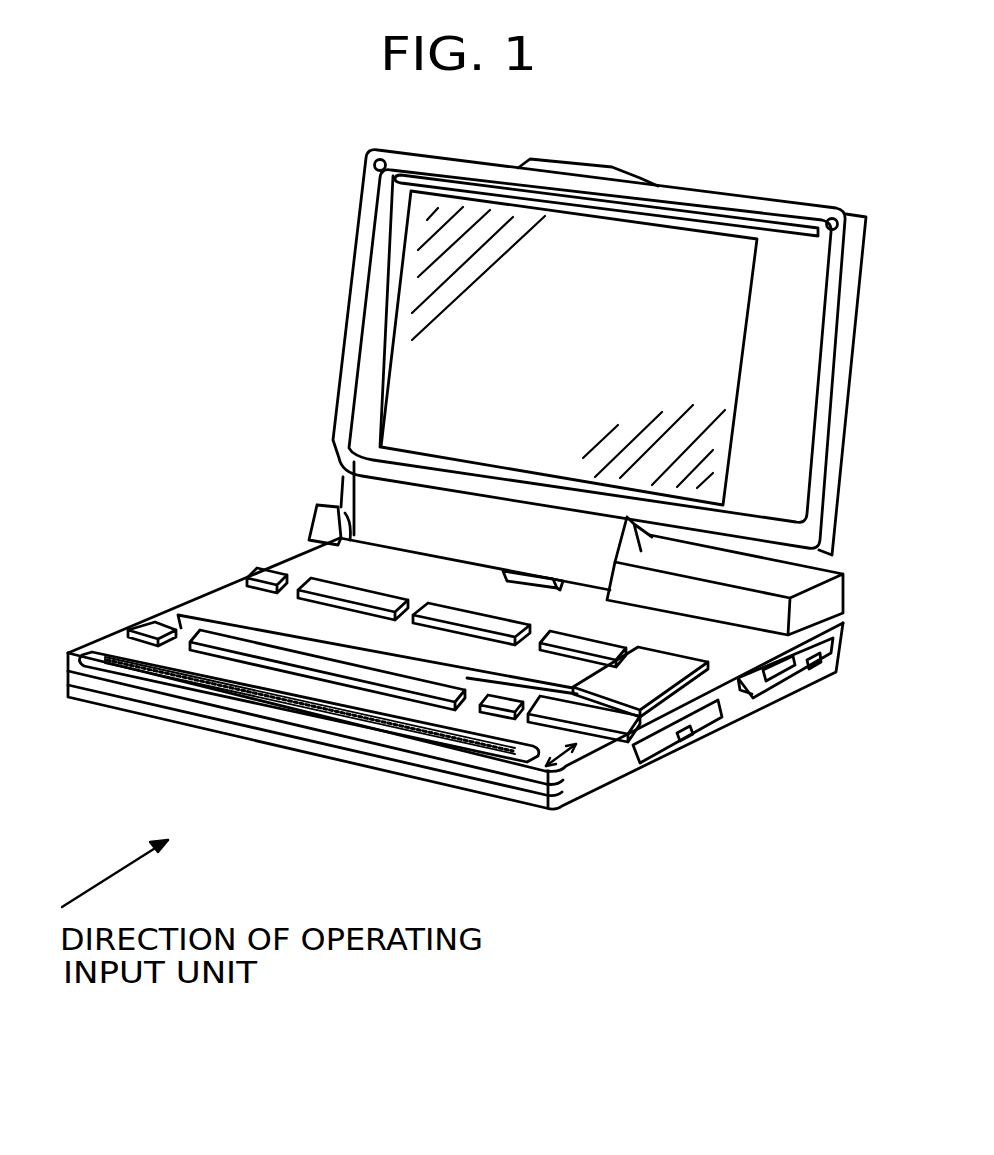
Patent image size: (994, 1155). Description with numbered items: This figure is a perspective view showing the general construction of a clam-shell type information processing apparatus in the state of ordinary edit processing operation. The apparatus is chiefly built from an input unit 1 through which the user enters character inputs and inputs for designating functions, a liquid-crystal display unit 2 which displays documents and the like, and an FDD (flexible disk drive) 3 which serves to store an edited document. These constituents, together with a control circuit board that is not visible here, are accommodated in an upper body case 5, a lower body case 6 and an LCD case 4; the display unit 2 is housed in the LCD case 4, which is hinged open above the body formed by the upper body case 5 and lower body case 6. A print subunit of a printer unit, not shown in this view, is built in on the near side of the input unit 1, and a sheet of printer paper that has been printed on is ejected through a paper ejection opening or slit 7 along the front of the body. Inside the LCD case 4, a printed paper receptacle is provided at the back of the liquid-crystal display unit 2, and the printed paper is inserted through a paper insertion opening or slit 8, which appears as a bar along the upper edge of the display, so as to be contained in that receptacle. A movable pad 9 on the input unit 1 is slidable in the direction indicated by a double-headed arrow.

The input unit 1 is at (227, 612).
The liquid-crystal display unit 2 is at (400, 397).
The FDD (flexible disk drive) 3 is at (789, 690).
The LCD case 4 is at (838, 214).
The upper body case 5 is at (283, 558).
The lower body case 6 is at (622, 765).
The paper ejection opening 7 is at (123, 666).
The paper insertion opening 8 is at (397, 184).
The movable pad 9 is at (110, 654).